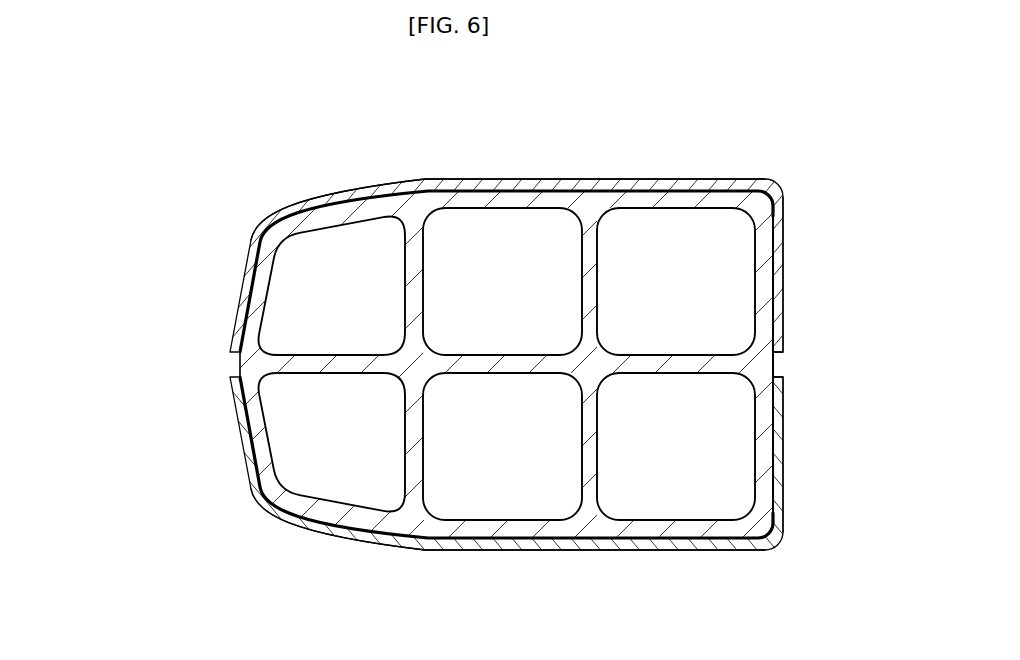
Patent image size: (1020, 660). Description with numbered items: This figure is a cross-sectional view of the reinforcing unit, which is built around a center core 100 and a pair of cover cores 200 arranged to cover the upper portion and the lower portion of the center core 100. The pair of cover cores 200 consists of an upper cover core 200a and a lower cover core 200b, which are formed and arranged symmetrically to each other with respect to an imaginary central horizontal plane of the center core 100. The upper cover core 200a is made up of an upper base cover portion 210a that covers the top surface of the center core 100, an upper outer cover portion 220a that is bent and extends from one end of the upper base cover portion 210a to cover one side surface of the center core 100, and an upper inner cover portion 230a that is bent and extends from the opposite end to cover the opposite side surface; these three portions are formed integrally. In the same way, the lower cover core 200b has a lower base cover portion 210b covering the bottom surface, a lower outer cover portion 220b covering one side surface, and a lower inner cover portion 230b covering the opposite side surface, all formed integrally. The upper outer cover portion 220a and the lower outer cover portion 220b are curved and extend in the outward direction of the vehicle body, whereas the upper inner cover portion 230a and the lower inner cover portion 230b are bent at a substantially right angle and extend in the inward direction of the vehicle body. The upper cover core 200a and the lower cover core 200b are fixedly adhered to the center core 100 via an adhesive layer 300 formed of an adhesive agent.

The center core 100 is at (413, 518).
The cover cores 200 is at (472, 330).
The upper cover core 200a is at (472, 330).
The lower cover core 200b is at (472, 330).
The upper base cover portion 210a is at (511, 184).
The lower base cover portion 210b is at (568, 546).
The upper outer cover portion 220a is at (250, 258).
The lower outer cover portion 220b is at (250, 470).
The upper inner cover portion 230a is at (782, 262).
The lower inner cover portion 230b is at (780, 476).
The adhesive layer 300 is at (776, 410).